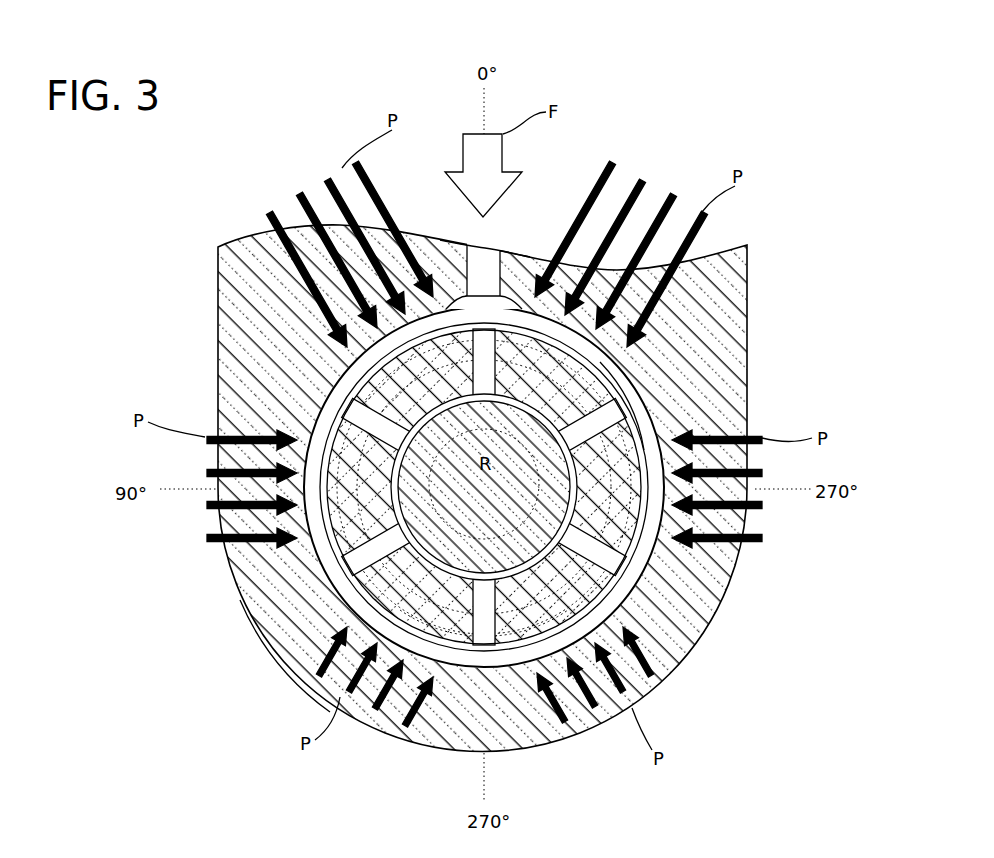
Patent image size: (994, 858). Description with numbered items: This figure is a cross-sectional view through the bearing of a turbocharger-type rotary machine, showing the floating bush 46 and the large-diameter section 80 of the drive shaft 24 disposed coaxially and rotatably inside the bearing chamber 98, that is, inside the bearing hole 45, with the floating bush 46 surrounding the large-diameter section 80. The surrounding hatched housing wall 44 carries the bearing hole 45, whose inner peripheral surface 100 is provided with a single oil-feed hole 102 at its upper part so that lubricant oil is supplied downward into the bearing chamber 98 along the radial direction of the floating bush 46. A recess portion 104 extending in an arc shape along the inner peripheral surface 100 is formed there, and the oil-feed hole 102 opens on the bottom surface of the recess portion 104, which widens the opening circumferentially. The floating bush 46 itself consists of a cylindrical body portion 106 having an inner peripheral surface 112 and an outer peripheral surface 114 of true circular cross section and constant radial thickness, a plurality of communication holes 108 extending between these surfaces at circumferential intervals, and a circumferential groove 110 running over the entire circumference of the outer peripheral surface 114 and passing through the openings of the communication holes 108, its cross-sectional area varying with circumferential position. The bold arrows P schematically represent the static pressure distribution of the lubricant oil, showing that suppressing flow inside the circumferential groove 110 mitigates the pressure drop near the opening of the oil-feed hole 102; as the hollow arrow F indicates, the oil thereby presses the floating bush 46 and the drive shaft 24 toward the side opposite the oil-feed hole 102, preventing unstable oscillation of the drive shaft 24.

The drive shaft 24 is at (352, 374).
The large-diameter section 80 is at (392, 480).
The elastic body 44 is at (645, 356).
The bearing hole 45 is at (650, 560).
The floating bush 46 is at (615, 370).
The bearing chamber 98 is at (640, 403).
The inner peripheral surface 100 is at (714, 620).
The oil-feed hole 102 is at (488, 260).
The recess portion 104 is at (500, 292).
The body portion 106 is at (285, 672).
The communication holes 108 is at (483, 632).
The circumferential groove 110 is at (330, 590).
The inner peripheral surface 112 is at (466, 585).
The outer peripheral surface 114 is at (350, 412).